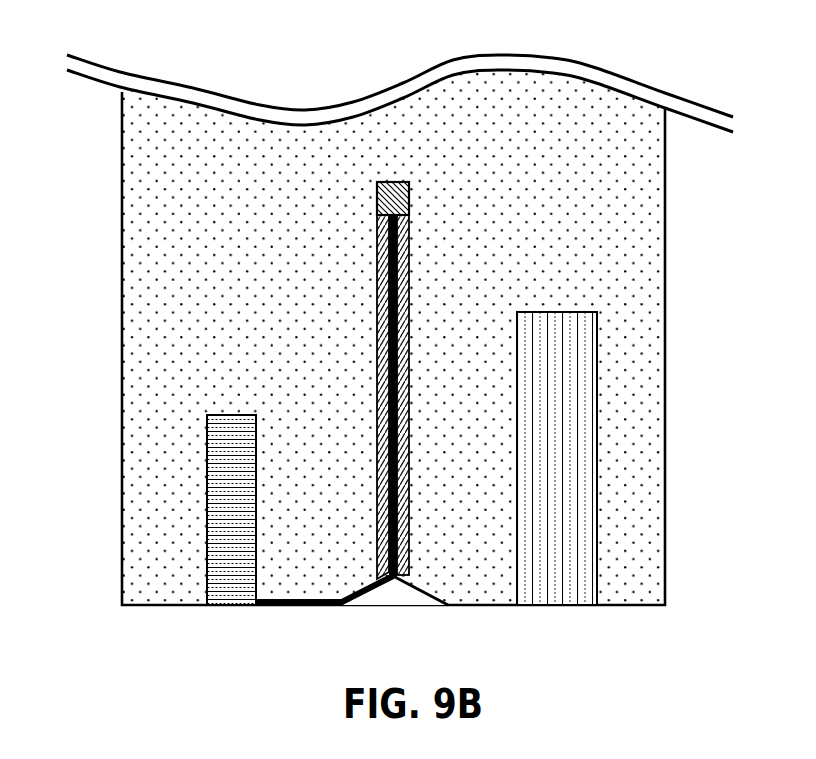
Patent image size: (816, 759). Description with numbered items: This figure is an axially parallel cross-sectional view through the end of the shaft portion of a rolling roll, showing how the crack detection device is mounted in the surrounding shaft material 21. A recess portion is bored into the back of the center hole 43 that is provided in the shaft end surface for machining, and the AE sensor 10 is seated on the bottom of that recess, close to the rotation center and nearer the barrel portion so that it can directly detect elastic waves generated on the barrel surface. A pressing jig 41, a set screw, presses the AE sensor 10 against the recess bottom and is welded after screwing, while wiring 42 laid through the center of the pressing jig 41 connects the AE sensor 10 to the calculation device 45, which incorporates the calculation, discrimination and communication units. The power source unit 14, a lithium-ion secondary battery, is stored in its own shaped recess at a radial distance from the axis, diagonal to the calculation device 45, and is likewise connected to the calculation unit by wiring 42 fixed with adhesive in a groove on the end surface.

The cap / tip of magnetic pole 10 is at (377, 200).
The pillar structure 41 is at (409, 287).
The bottom layer 42 is at (368, 578).
The void region 43 is at (397, 593).
The left pillar 45 is at (207, 493).
The right pillar 14 is at (597, 406).
The substrate 21 is at (643, 535).